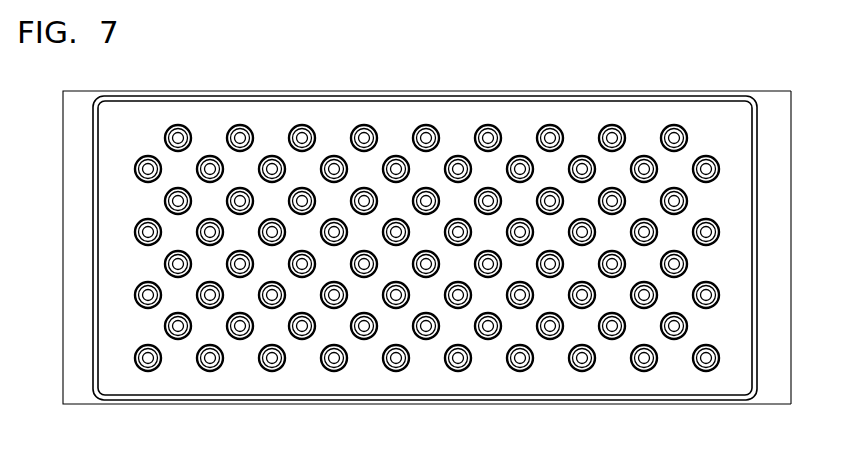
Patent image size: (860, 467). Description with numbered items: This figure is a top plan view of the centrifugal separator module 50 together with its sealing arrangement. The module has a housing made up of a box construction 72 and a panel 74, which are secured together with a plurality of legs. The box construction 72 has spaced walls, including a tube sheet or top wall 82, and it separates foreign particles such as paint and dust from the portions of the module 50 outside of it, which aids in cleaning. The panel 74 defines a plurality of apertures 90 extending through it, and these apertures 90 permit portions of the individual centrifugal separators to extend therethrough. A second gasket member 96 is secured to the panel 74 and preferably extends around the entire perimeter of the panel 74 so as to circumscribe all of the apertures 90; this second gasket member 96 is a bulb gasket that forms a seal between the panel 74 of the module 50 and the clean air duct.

The centrifugal separator module 50 is at (342, 70).
The box construction 72 is at (791, 233).
The panel 74 is at (694, 113).
The top wall 82 is at (781, 147).
The apertures 90 is at (164, 136).
The second gasket member 96 is at (166, 398).